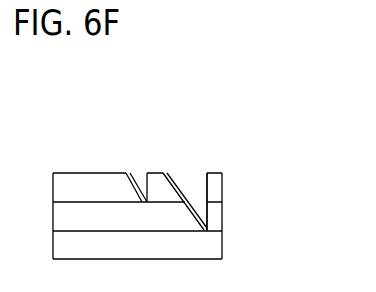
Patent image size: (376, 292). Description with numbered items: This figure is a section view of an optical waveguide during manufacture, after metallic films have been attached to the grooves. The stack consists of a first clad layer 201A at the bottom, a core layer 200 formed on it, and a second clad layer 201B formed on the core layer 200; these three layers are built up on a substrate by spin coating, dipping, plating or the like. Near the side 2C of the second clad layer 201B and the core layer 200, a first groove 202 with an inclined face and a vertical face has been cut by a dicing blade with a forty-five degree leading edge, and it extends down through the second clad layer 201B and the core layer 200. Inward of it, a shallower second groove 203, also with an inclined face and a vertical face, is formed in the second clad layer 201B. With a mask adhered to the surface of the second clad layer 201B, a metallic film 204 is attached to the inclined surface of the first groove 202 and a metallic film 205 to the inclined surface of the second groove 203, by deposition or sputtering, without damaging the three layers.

The metallic film 205 is at (133, 172).
The second groove 203 is at (146, 175).
The metallic film 204 is at (181, 183).
The first groove 202 is at (190, 188).
The second clad layer 201B is at (215, 189).
The core layer 200 is at (215, 216).
The first clad layer 201A is at (215, 244).
The side (end) 2C is at (222, 259).